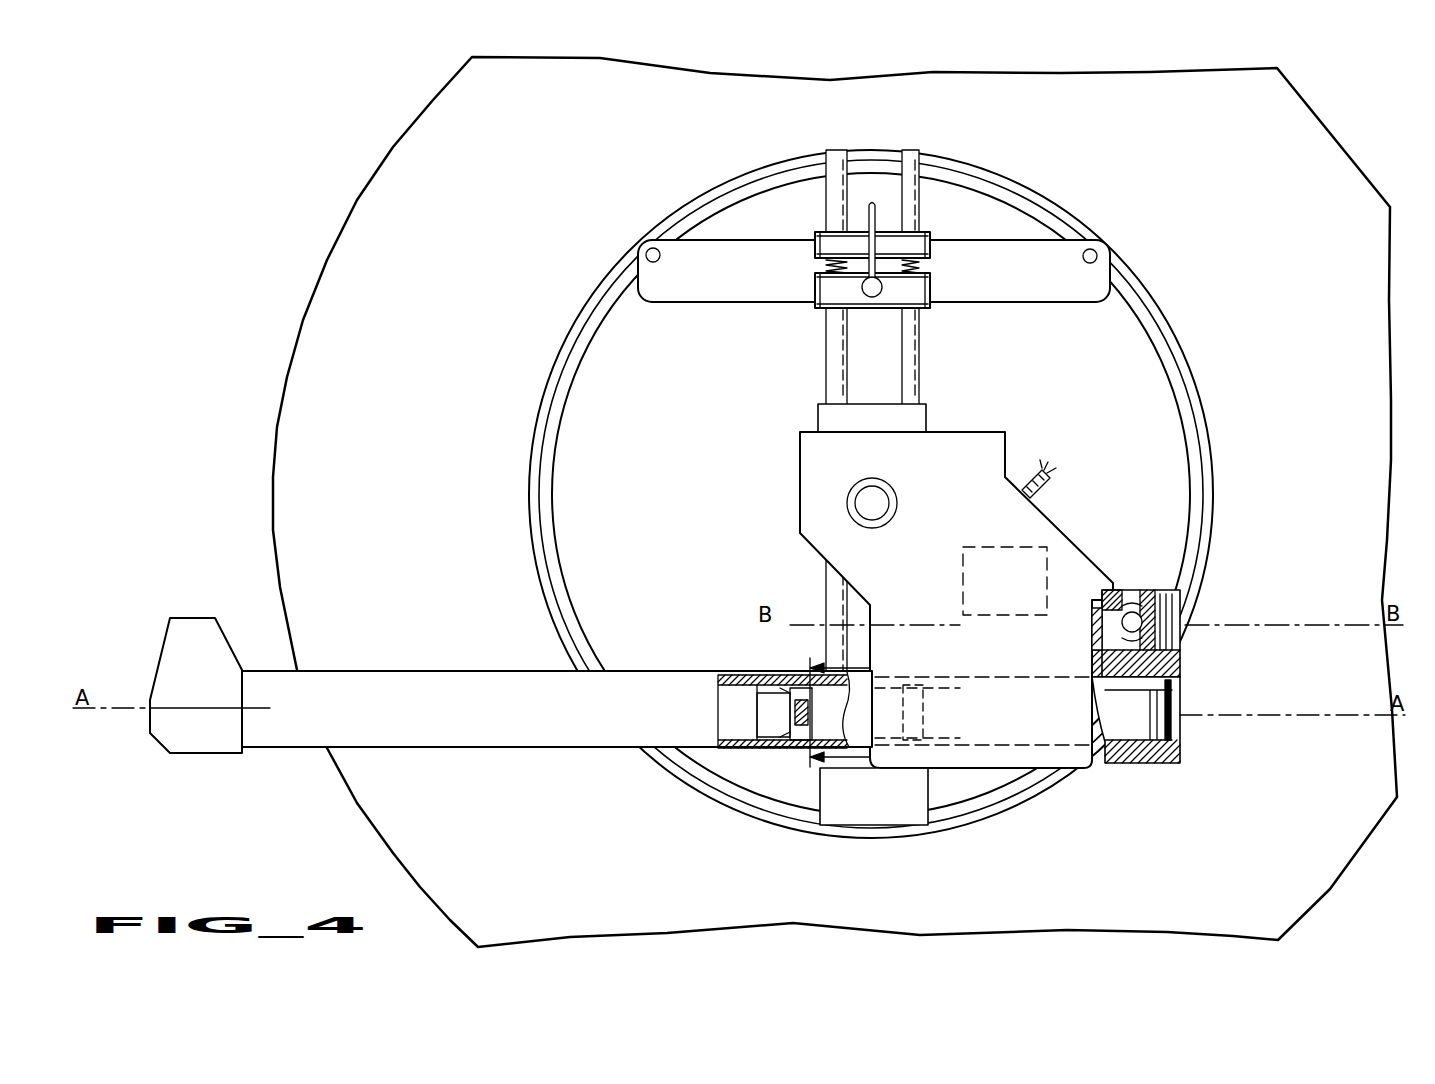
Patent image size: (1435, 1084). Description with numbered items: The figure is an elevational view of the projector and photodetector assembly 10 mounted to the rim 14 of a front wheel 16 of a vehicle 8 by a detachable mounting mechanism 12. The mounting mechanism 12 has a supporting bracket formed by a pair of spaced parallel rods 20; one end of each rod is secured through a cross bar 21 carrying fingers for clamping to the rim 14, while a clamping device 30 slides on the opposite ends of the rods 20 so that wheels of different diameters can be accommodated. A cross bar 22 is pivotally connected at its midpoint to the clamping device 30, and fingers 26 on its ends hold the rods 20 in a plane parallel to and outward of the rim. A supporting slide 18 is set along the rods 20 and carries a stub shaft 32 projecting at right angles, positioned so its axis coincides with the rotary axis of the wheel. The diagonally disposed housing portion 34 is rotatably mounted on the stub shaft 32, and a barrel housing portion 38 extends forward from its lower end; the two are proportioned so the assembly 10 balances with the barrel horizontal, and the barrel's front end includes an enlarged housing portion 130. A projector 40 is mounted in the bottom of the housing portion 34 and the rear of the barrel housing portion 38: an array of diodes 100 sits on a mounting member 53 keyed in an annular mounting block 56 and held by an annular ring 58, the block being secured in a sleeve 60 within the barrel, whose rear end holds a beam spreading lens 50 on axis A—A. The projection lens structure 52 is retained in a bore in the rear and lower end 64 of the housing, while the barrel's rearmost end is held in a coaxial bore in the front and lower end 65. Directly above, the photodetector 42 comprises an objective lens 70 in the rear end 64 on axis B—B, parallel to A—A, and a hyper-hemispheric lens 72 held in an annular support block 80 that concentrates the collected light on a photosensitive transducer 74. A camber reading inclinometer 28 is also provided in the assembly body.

The vehicle 8 is at (847, 719).
The projector and photodetector assembly 10 is at (645, 586).
The detachable mounting mechanism 12 is at (812, 336).
The rim 14 is at (569, 333).
The front wheel 16 is at (575, 136).
The supporting slide 18 is at (918, 413).
The spaced parallel rods 20 is at (898, 332).
The cross bar 21 is at (888, 825).
The cross bar 22 is at (1010, 281).
The fingers 26 is at (640, 244).
The camber reading inclinometer 28 is at (963, 552).
The clamping device 30 is at (830, 302).
The stub shaft 32 is at (867, 497).
The diagonally disposed housing portion 34 is at (800, 464).
The barrel housing portion 38 is at (462, 672).
The projector 40 is at (1192, 734).
The photodetector 42 is at (1190, 601).
The beam spreading lens 50 is at (925, 693).
The projection lens structure 52 is at (1165, 702).
The mounting member 53 is at (805, 690).
The annular mounting block 56 is at (790, 690).
The annular ring 58 is at (768, 740).
The sleeve 60 is at (735, 675).
The rear and lower end 64 is at (1178, 760).
The front and lower end 65 is at (898, 772).
The objective lens 70 is at (1152, 592).
The hyper-hemispheric lens 72 is at (1105, 612).
The photosensitive transducer 74 is at (1120, 625).
The annular support block 80 is at (1122, 590).
The diodes 100 is at (800, 745).
The enlarged housing portion 130 is at (168, 737).